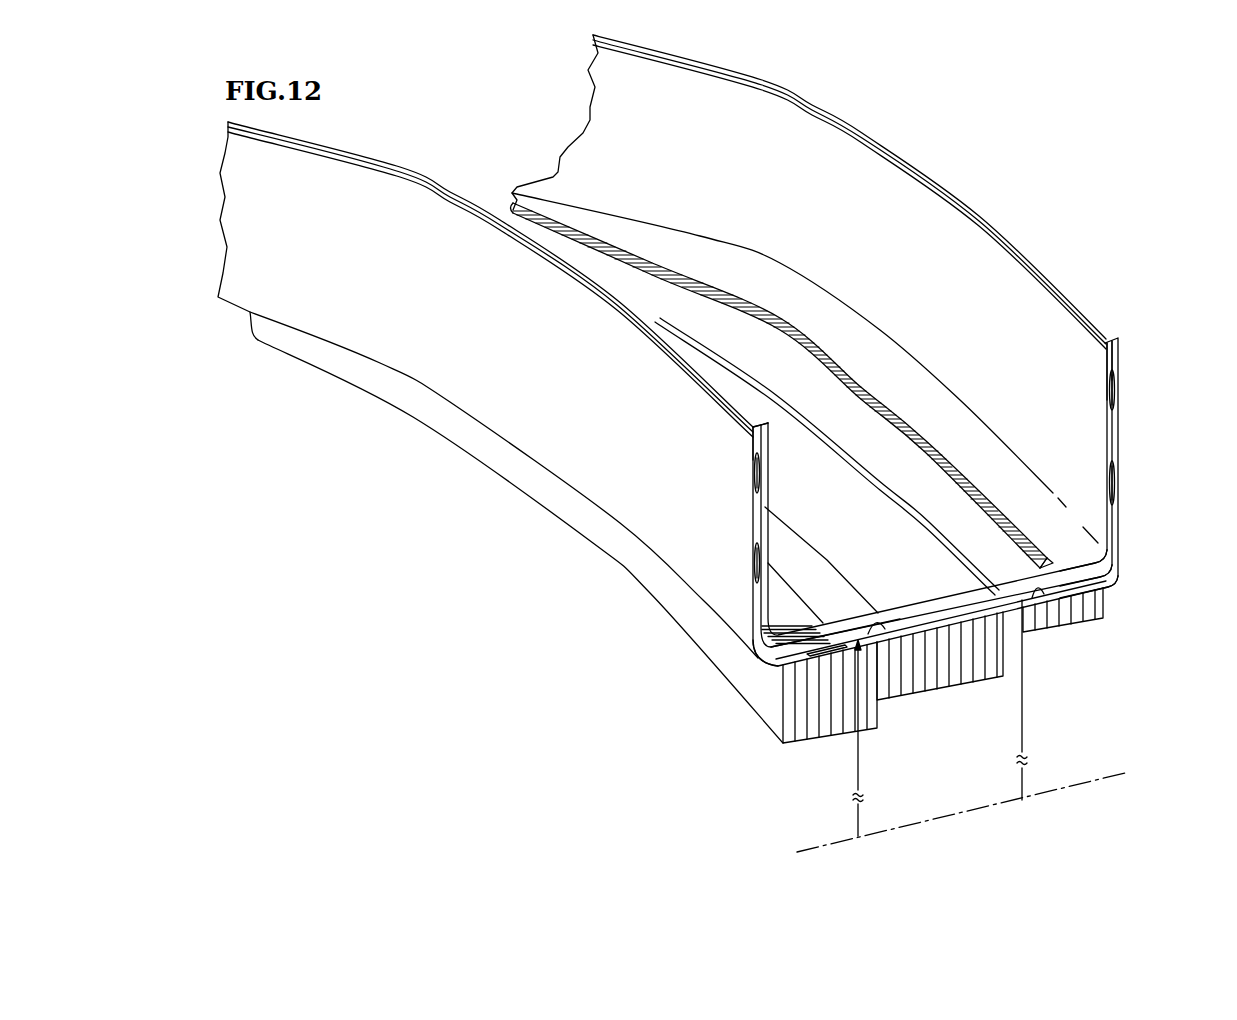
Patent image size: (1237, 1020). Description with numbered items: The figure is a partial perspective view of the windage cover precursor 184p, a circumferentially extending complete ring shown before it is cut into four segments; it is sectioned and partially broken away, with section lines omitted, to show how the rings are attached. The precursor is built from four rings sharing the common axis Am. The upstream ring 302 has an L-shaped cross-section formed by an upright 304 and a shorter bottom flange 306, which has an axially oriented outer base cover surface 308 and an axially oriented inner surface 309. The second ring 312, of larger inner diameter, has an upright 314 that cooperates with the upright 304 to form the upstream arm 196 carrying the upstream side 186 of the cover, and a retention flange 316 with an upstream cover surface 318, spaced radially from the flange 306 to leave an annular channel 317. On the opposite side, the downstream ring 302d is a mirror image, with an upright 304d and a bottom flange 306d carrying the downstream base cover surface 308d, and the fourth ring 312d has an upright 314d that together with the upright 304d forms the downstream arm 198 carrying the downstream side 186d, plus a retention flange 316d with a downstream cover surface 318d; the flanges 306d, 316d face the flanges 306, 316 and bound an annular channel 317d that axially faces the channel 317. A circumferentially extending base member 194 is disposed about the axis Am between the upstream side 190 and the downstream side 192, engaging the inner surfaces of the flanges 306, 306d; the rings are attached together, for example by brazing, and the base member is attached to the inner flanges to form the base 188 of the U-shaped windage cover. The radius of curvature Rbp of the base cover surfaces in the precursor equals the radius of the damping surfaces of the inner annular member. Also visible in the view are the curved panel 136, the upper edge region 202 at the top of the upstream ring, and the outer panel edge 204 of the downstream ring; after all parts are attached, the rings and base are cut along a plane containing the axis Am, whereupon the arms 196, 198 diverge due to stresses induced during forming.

The curved panel 136 is at (600, 541).
The windage cover precursor 184p is at (405, 482).
The upstream arm 196 is at (475, 393).
The outer panel 204 is at (1120, 360).
The channel top edge 202 is at (748, 440).
The upstream ring 302 is at (750, 517).
The upright 304 is at (753, 495).
The upright 314 is at (770, 453).
The upstream side 186 is at (769, 495).
The second ring 312 is at (772, 532).
The retention flange 316 is at (805, 640).
The annular channel 317 is at (760, 641).
The upstream cover surface 318 is at (798, 643).
The upstream base cover surface 308 is at (834, 628).
The base member 194 is at (947, 627).
The upstream side 190 is at (757, 664).
The bottom flange 306 is at (792, 656).
The inner surface 309 is at (885, 635).
The bottom flange 306d is at (1018, 603).
The radius of curvature Rbp is at (858, 783).
The axis Am is at (1100, 780).
The retention flange 316d is at (1077, 567).
The base 188 is at (1110, 603).
The downstream side 192 is at (1117, 585).
The annular channel 317d is at (1103, 567).
The downstream ring 302d is at (1122, 502).
The downstream arm 198 is at (1122, 448).
The upright 314d is at (1105, 468).
The upright 304d is at (1117, 423).
The fourth ring 312d is at (1105, 415).
The downstream side 186d is at (1105, 378).
The downstream cover surface 318d is at (956, 470).
The downstream base cover surface 308d is at (1050, 569).